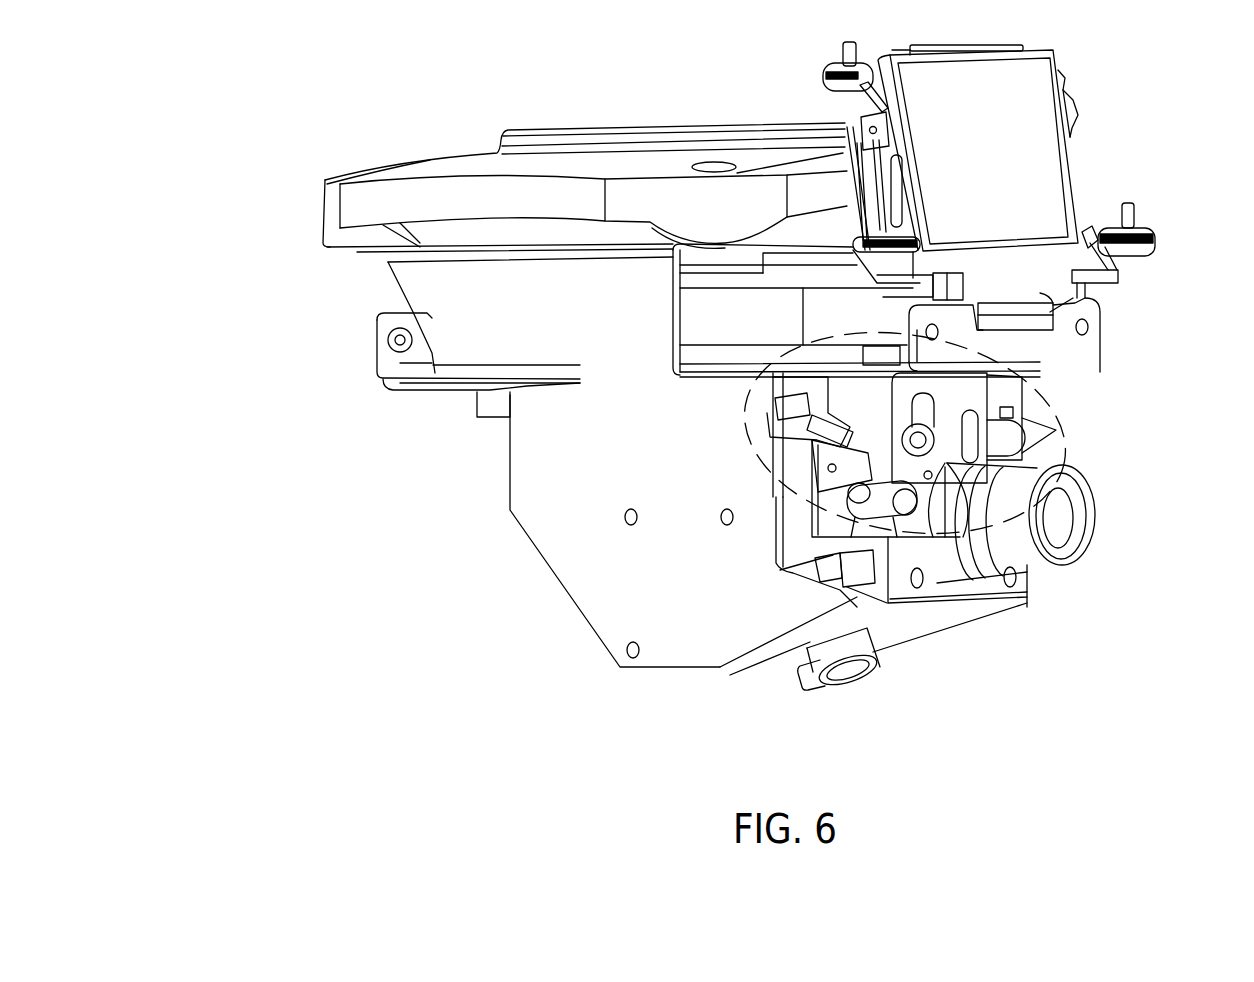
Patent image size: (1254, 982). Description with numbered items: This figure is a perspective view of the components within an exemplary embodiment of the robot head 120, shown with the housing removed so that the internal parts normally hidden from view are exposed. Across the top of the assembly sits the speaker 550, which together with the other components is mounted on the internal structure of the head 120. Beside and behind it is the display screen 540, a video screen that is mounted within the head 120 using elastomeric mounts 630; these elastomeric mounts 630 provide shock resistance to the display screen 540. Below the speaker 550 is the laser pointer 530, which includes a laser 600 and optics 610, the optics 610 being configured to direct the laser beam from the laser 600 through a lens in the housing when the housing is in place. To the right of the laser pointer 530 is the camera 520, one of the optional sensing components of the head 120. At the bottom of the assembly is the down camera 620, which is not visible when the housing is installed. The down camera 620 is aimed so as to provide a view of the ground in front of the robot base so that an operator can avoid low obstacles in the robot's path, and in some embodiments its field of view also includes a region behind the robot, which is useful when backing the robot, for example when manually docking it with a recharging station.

The head 120 is at (278, 114).
The speaker 550 is at (700, 125).
The elastomeric mounts 630 is at (825, 78).
The display screen 540 is at (1040, 148).
The laser 600 is at (1057, 412).
The laser pointer 530 is at (758, 437).
The optics 610 is at (867, 475).
The camera 520 is at (1060, 510).
The down camera 620 is at (875, 652).